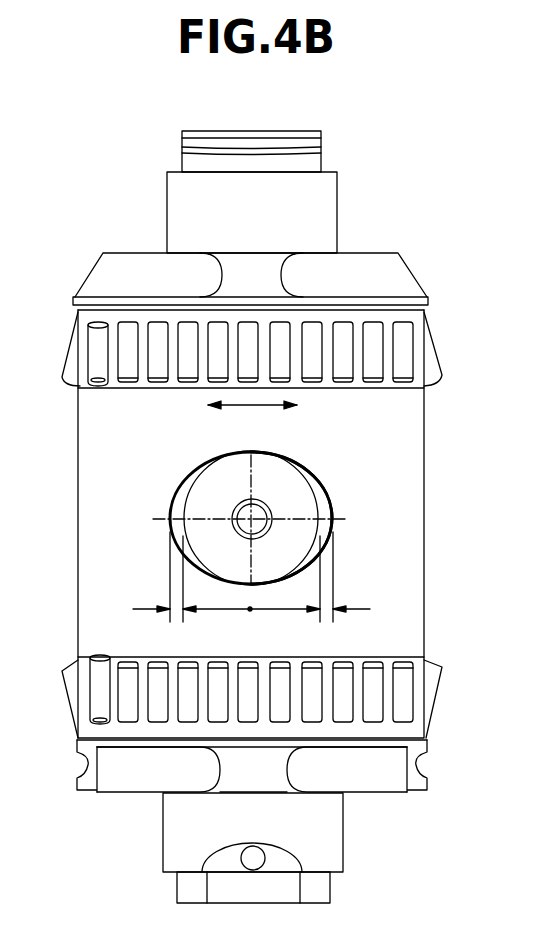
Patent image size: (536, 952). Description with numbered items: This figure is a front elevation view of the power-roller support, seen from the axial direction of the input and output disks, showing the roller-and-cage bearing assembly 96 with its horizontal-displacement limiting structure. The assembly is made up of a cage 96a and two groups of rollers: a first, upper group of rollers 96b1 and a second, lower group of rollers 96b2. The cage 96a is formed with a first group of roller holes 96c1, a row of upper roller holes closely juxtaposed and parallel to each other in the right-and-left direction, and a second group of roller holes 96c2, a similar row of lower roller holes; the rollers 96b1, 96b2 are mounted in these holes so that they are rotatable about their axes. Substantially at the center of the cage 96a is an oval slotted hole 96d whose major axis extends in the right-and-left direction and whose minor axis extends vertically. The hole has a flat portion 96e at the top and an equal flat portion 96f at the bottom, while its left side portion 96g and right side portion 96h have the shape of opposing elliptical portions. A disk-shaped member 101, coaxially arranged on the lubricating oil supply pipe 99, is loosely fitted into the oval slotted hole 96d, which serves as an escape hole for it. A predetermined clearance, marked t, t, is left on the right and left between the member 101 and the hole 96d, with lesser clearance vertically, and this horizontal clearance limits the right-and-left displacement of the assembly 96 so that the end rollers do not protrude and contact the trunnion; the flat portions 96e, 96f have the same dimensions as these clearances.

The roller-and-cage bearing assembly 96 is at (78, 517).
The cage 96a is at (410, 538).
The rollers (first group) 96b1 is at (97, 338).
The rollers (second group) 96b2 is at (100, 683).
The first group of roller holes 96c1 is at (348, 358).
The second group of roller holes 96c2 is at (375, 672).
The oval slotted hole 96d is at (315, 480).
The flat portion (top) 96e is at (240, 453).
The flat portion (bottom) 96f is at (220, 583).
The left side portion 96g is at (167, 516).
The right side portion 96h is at (327, 544).
The lubricating oil supply pipe 99 is at (233, 515).
The disk-shaped member 101 is at (329, 507).